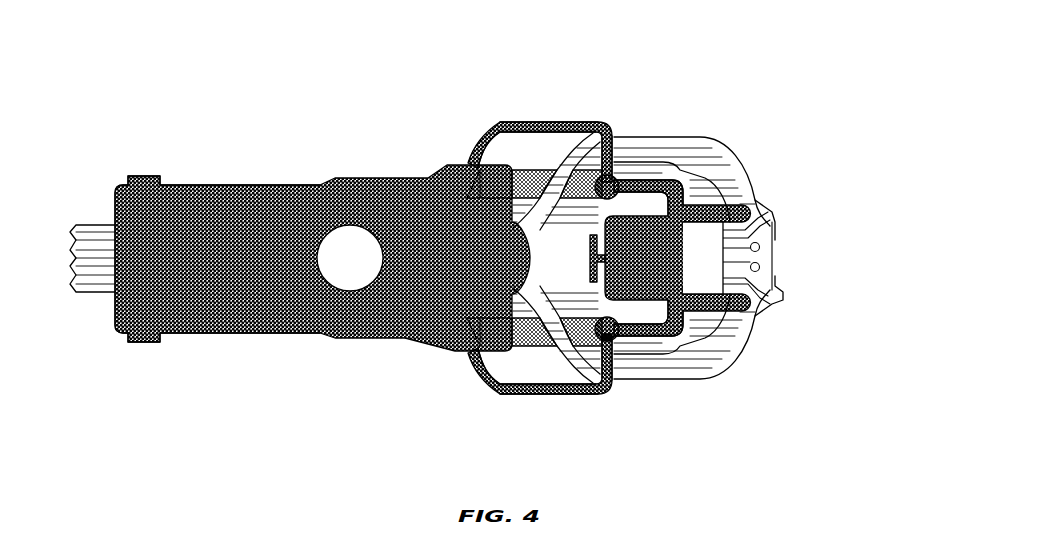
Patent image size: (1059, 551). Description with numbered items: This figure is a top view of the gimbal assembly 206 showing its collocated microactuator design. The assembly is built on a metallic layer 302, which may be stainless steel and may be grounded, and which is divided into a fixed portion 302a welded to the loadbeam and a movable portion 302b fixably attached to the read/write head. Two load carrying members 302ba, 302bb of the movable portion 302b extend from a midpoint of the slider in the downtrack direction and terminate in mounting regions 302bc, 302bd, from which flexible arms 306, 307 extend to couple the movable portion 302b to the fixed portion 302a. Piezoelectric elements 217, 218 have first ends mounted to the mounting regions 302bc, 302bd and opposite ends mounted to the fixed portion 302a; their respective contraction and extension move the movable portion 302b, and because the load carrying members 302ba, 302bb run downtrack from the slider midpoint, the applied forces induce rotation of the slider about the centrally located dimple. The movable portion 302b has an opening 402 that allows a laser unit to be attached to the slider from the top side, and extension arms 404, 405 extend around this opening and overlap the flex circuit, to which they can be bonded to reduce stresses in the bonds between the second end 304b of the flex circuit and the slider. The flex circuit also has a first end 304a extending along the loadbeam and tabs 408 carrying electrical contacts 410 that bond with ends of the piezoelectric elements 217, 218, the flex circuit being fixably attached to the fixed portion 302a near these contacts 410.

The gimbal assembly 206 is at (445, 108).
The metallic layer 302 is at (400, 338).
The fixed portion 302a is at (225, 328).
The movable portion 302b is at (700, 352).
The load carrying member 302ba is at (657, 152).
The load carrying member 302bb is at (655, 340).
The mounting region 302bc is at (602, 128).
The mounting region 302bd is at (614, 394).
The first end of flex circuit assembly 304a is at (95, 285).
The second end of flex circuit assembly 304b is at (740, 170).
The flexible arm 306 is at (580, 118).
The flexible arm 307 is at (558, 395).
The piezoelectric element 217 is at (533, 150).
The piezoelectric element 218 is at (528, 362).
The opening 402 is at (722, 266).
The extension arm 404 is at (755, 208).
The extension arm 405 is at (757, 302).
The extension/tab 408 is at (484, 150).
The electrical contact 410 is at (490, 185).